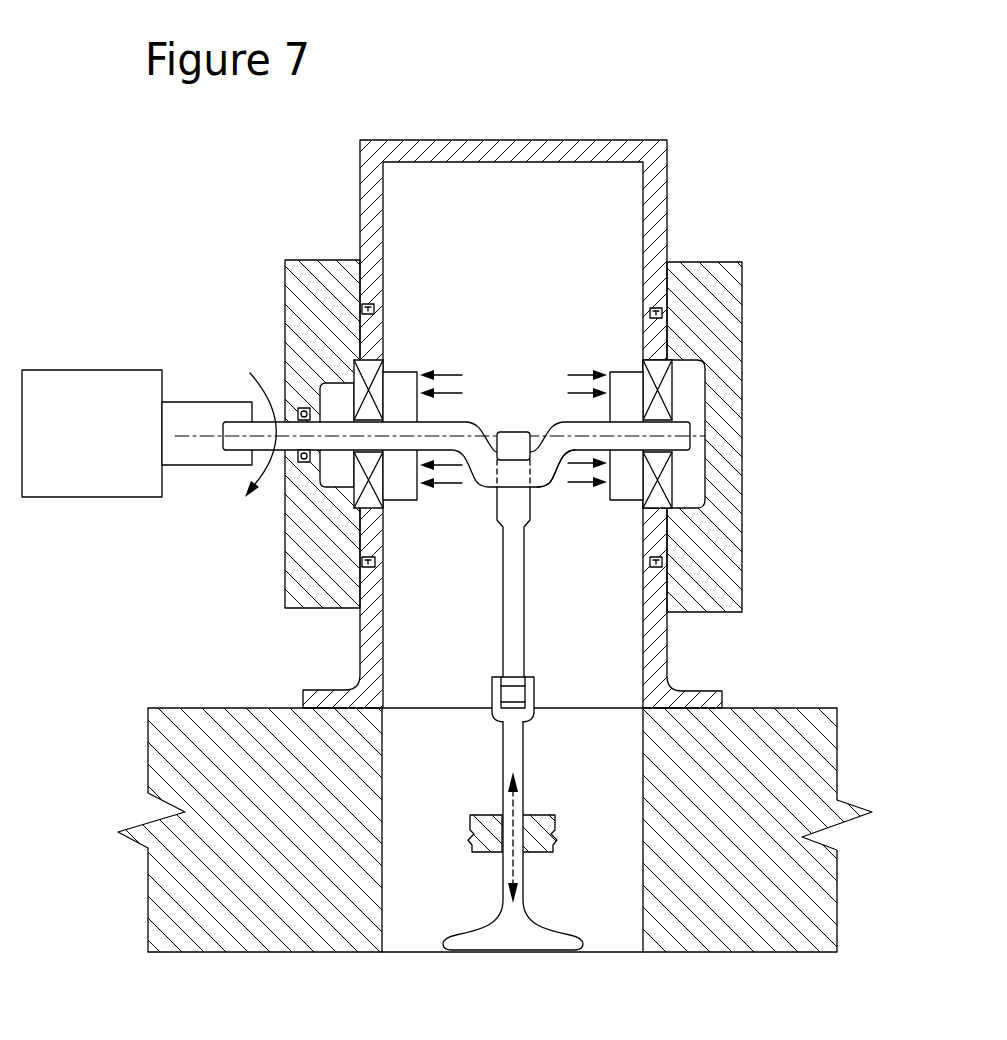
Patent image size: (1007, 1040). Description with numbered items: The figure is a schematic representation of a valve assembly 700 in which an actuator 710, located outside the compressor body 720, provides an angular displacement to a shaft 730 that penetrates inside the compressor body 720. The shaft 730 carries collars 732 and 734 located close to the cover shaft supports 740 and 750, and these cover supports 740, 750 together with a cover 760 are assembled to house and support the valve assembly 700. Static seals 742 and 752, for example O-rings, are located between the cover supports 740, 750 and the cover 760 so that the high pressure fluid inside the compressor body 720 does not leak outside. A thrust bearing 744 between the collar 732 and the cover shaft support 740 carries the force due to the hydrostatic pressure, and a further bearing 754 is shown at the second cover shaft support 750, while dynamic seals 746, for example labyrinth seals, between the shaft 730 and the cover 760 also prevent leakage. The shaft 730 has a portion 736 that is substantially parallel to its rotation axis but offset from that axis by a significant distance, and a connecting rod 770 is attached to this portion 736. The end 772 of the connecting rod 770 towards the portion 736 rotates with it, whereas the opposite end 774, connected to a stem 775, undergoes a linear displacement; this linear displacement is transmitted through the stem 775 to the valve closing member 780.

The valve assembly 700 is at (688, 47).
The actuator 710 is at (73, 380).
The compressor body 720 is at (758, 737).
The shaft 730 is at (440, 436).
The collar 732 is at (397, 483).
The collar 734 is at (617, 482).
The portion 736 is at (542, 468).
The cover shaft support 740 is at (312, 527).
The static seal 742 is at (365, 308).
The thrust bearing 744 is at (287, 362).
The dynamic seal 746 is at (303, 419).
The cover shaft support 750 is at (713, 558).
The static seal 752 is at (660, 312).
The bearing 754 is at (660, 387).
The cover 760 is at (590, 162).
The connecting rod 770 is at (513, 605).
The end of connecting rod 772 is at (510, 447).
The opposite end 774 is at (513, 674).
The stem 775 is at (523, 867).
The valve closing member 780 is at (507, 923).